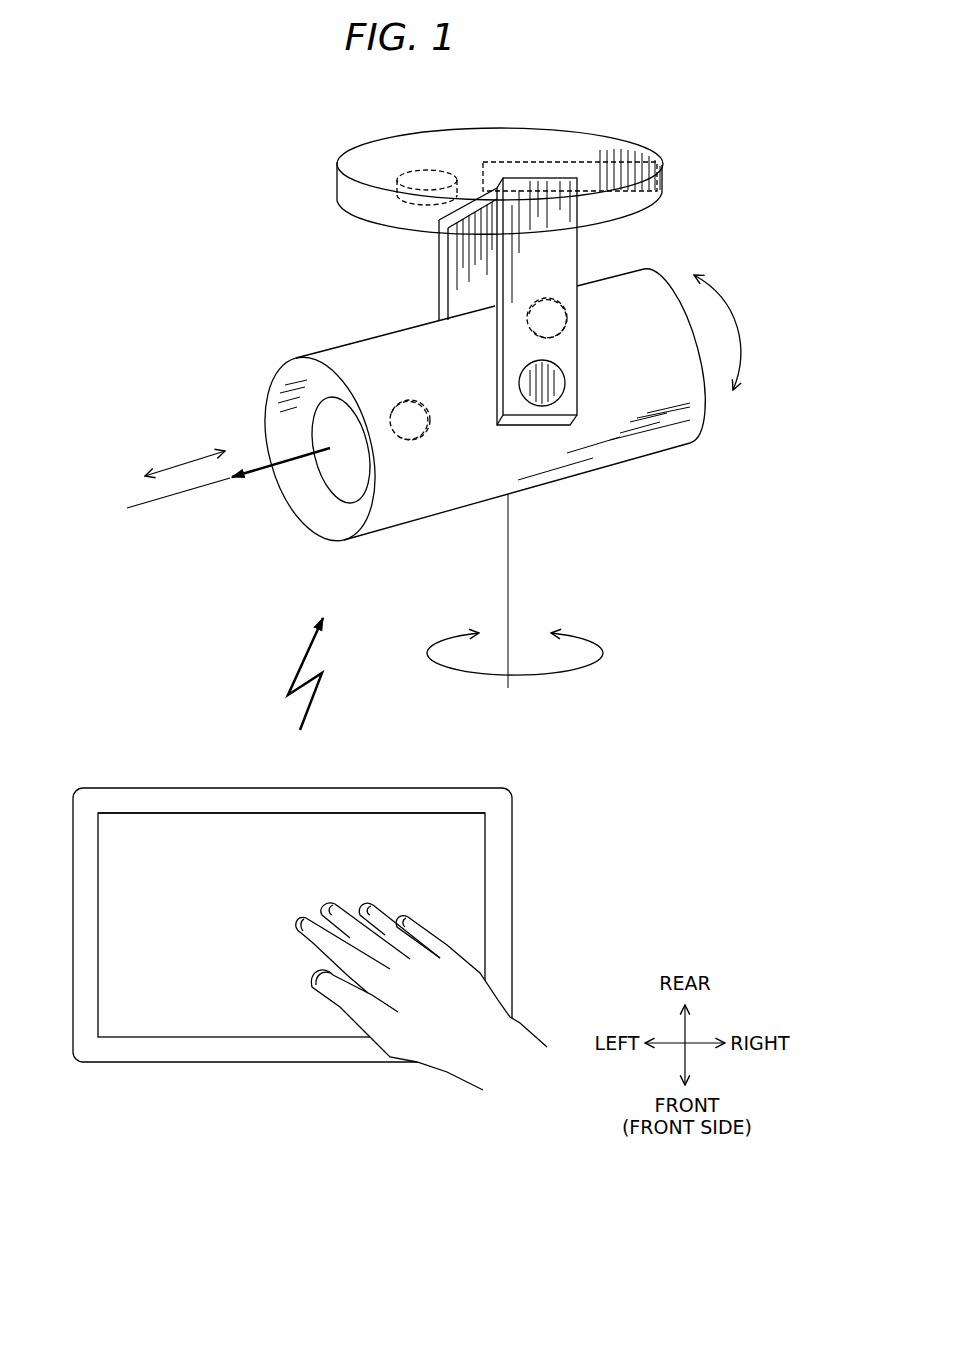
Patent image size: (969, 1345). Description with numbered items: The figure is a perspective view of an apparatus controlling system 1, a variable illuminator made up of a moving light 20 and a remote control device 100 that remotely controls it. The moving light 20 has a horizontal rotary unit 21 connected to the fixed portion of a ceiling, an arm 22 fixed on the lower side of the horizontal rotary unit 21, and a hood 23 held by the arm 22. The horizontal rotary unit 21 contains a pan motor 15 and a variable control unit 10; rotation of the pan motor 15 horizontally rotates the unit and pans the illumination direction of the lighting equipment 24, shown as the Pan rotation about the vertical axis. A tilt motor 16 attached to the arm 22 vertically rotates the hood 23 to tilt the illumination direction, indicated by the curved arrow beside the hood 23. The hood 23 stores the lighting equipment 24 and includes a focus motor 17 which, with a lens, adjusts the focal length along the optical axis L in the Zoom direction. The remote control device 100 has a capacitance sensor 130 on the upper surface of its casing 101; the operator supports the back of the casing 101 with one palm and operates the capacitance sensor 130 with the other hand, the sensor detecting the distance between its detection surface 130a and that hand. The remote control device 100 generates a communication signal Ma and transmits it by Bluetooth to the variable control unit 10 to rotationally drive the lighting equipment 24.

The apparatus controlling system 1 is at (684, 141).
The variable control unit 10 is at (548, 162).
The pan motor 15 is at (427, 196).
The tilt motor 16 is at (567, 313).
The focus motor 17 is at (410, 440).
The moving light 20 is at (278, 266).
The horizontal rotary unit 21 is at (653, 203).
The arm 22 is at (563, 256).
The hood 23 is at (687, 395).
The lighting equipment 24 is at (343, 480).
The remote control device 100 is at (339, 876).
The casing 101 is at (512, 880).
The capacitance sensor 130 is at (494, 834).
The detection surface 130a is at (445, 812).
The optical axis L is at (263, 462).
The zoom direction Zoom is at (183, 462).
The pan direction Pan is at (572, 665).
The communication signal Ma is at (303, 658).